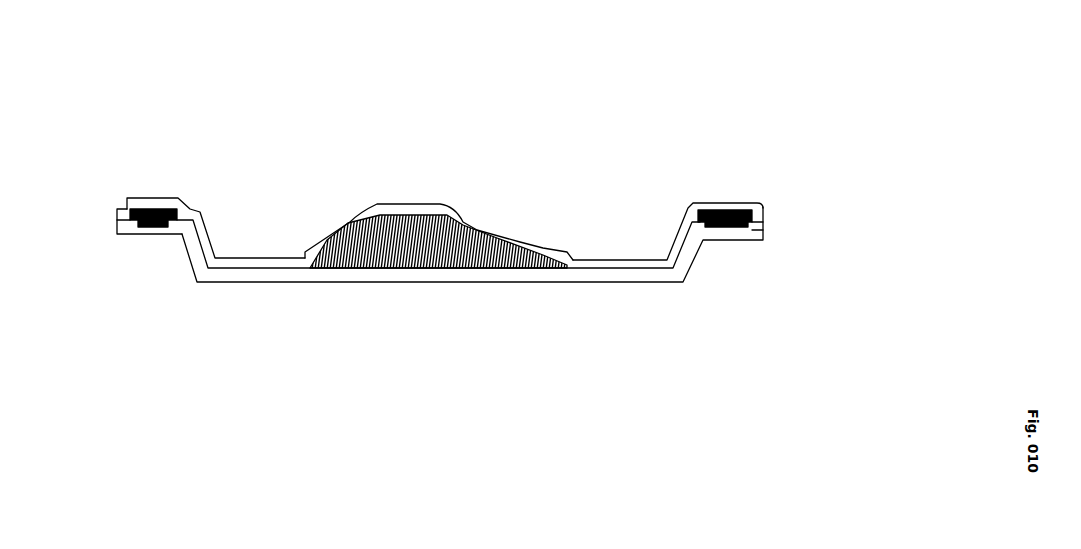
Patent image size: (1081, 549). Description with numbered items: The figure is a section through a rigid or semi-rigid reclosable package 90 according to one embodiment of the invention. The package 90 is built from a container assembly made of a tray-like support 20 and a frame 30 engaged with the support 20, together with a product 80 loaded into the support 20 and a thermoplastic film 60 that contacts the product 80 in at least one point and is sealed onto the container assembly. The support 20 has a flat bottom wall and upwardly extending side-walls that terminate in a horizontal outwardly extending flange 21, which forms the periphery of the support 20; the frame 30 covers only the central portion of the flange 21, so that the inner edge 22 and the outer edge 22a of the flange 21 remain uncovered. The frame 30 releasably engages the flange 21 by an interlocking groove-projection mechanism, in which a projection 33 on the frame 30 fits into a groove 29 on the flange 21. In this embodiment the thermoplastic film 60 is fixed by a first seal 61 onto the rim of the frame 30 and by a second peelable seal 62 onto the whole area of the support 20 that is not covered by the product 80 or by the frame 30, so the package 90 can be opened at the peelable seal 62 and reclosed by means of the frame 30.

The package 90 is at (440, 103).
The support 20 is at (380, 283).
The flange 21 is at (123, 234).
The inner edge 22 is at (185, 210).
The outer edge 22a is at (122, 218).
The second peelable seal 62 is at (182, 234).
The first seal 61 is at (157, 209).
The thermoplastic film 60 is at (371, 204).
The product 80 is at (466, 221).
The frame 30 is at (708, 211).
The projection 33 is at (712, 227).
The groove 29 is at (753, 240).